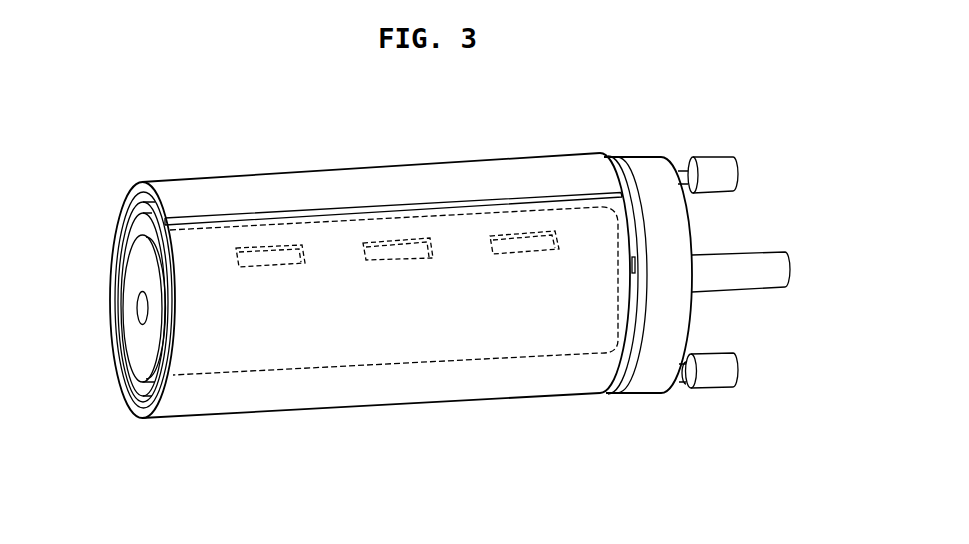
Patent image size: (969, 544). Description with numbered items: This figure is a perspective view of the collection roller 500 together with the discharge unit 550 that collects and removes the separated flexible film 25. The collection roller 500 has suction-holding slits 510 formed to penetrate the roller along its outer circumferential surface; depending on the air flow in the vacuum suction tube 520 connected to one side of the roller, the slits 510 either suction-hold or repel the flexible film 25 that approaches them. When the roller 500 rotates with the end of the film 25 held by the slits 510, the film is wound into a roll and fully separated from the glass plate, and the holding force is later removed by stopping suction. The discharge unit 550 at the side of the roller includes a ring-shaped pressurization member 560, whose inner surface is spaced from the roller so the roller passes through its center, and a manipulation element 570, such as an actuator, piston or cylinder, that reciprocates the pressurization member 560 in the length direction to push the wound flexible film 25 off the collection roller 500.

The flexible film 25 is at (147, 412).
The collection roller 500 is at (141, 352).
The suction-holding slits 510 is at (519, 244).
The vacuum suction tube 520 is at (767, 263).
The discharge unit 550 is at (652, 407).
The pressurization member 560 is at (645, 186).
The manipulation element 570 is at (728, 367).